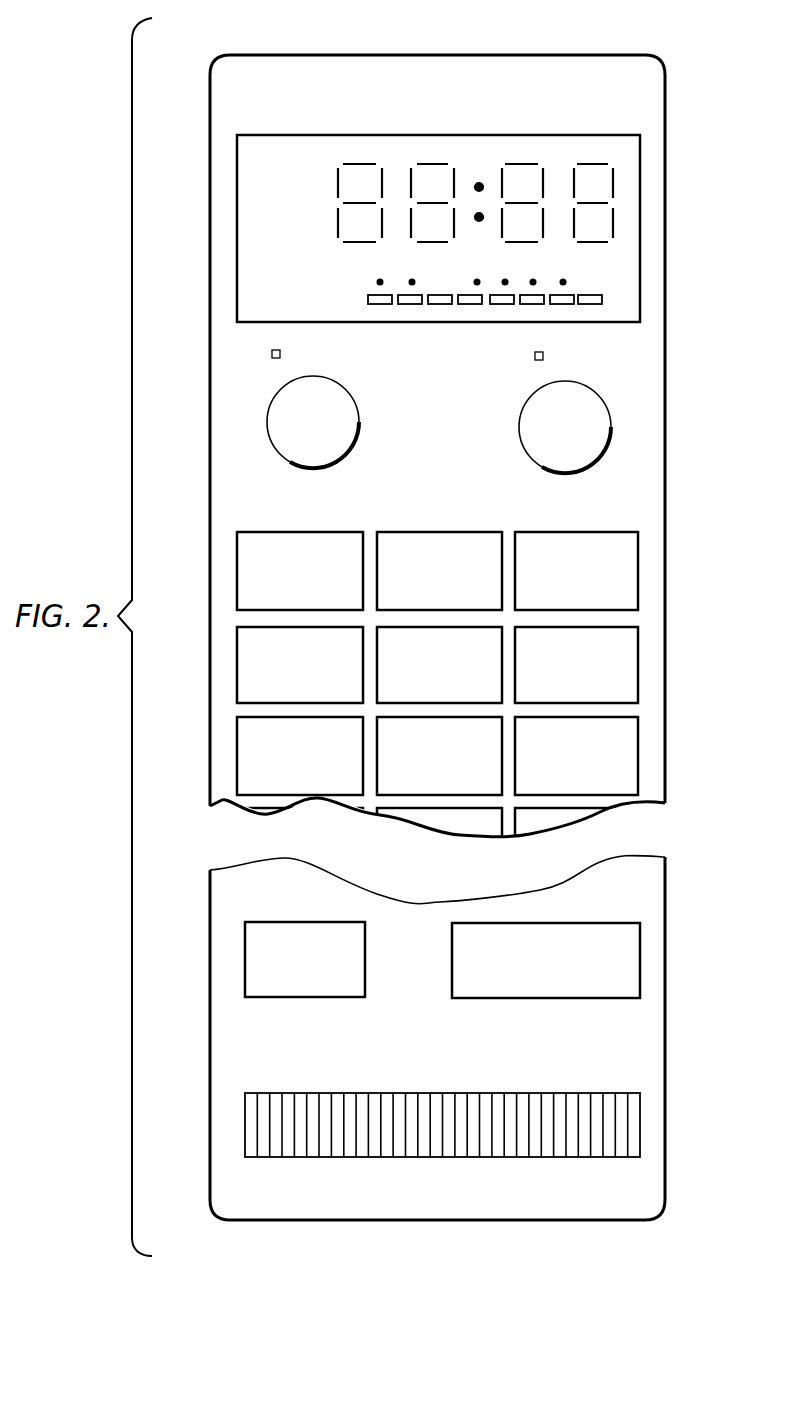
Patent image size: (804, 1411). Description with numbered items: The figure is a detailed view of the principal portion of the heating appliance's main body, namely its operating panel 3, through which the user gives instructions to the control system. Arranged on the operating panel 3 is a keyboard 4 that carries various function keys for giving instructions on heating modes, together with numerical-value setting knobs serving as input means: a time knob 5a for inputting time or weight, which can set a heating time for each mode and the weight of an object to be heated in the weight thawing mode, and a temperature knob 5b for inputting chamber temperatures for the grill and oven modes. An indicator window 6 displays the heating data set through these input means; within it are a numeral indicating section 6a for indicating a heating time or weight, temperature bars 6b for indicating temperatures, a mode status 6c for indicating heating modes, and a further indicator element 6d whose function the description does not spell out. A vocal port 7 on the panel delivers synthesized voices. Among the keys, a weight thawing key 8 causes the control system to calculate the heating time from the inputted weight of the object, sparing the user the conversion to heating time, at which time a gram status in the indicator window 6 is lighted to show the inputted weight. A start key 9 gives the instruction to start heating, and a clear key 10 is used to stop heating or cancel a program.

The operating panel 3 is at (628, 72).
The keyboard 4 is at (636, 592).
The time knob 5a is at (598, 432).
The temperature knob 5b is at (275, 415).
The indicator window 6 is at (630, 242).
The numeral indicating section 6a is at (529, 148).
The temperature bars 6b is at (608, 298).
The mode status 6c is at (240, 215).
The weight unit indicator 6d is at (642, 147).
The vocal port 7 is at (640, 1121).
The weight thawing key 8 is at (392, 787).
The start key 9 is at (633, 952).
The clear key 10 is at (248, 951).